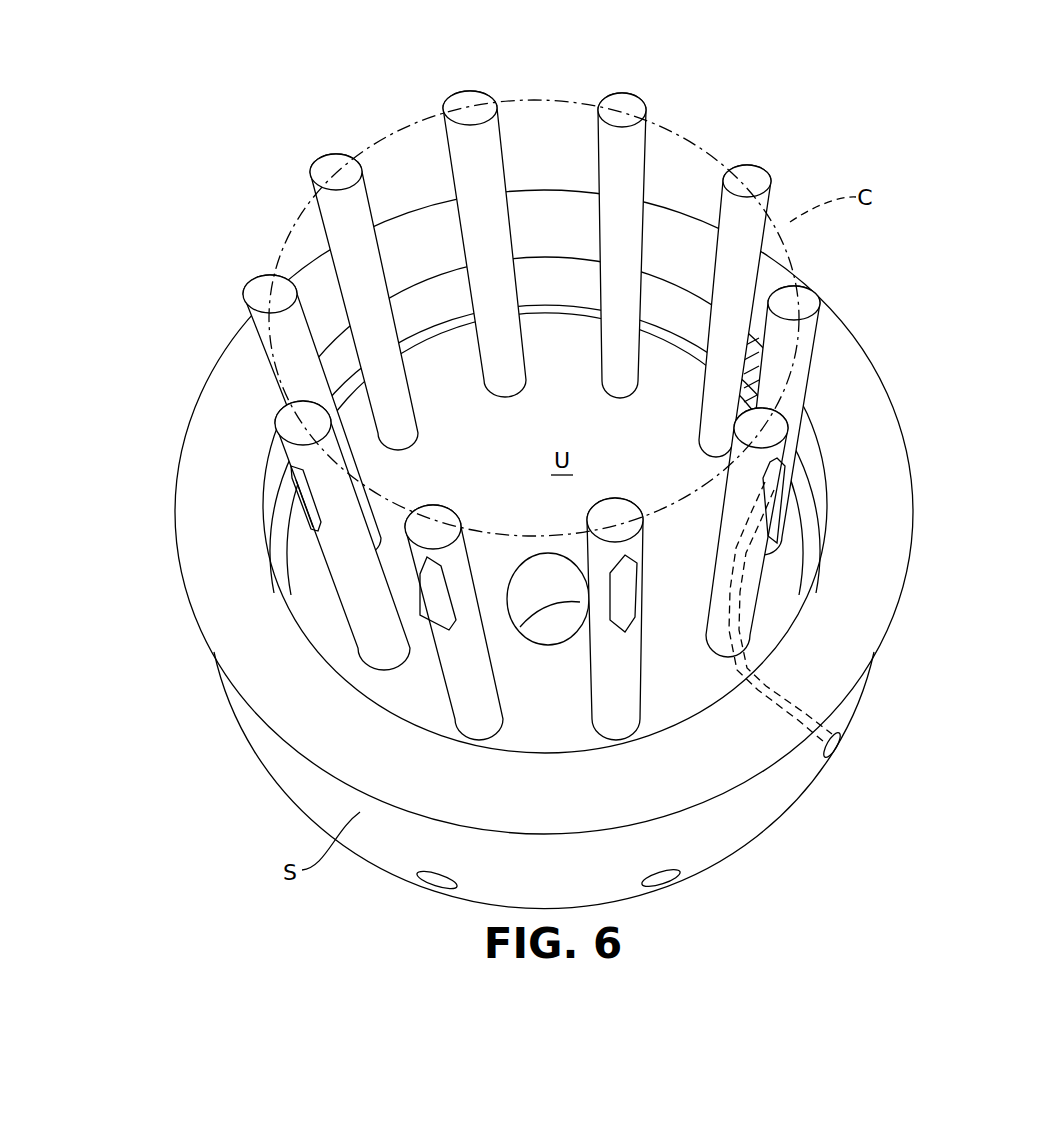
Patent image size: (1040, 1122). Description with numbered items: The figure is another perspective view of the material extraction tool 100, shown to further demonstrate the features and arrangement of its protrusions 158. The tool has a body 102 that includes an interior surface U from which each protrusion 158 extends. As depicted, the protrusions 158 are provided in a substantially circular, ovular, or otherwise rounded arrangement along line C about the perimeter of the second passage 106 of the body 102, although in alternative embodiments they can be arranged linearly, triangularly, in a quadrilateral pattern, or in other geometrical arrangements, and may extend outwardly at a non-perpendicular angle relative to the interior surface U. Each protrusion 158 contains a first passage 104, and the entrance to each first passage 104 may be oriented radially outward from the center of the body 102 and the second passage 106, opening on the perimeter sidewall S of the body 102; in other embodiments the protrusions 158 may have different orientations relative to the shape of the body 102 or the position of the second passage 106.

The tool 100 is at (186, 370).
The body 102 is at (263, 630).
The first passage 104 is at (772, 480).
The second passage 106 is at (537, 597).
The protrusion 158 is at (466, 97).